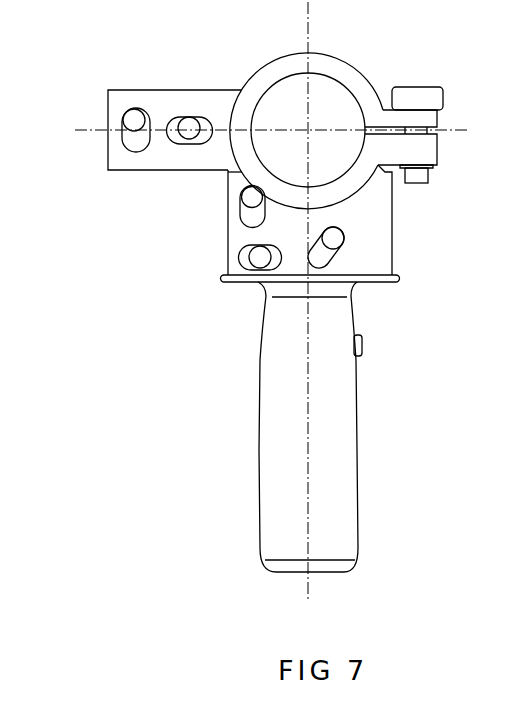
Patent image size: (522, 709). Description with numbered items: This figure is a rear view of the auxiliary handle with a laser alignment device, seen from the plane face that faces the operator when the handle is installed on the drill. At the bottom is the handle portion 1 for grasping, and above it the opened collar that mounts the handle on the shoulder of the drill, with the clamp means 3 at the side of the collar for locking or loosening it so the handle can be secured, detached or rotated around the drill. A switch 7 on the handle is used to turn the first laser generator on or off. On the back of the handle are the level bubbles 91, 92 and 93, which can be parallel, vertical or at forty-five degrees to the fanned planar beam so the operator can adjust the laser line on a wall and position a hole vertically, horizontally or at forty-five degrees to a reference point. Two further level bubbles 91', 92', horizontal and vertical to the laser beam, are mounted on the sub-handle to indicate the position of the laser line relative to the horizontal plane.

The handle portion 1 is at (342, 428).
The clamp means 3 is at (418, 89).
The switch 7 is at (363, 347).
The level bubble 91 is at (196, 216).
The level bubble 92 is at (206, 288).
The level bubble 93 is at (345, 248).
The level bubble 91' is at (116, 183).
The level bubble 92' is at (87, 137).